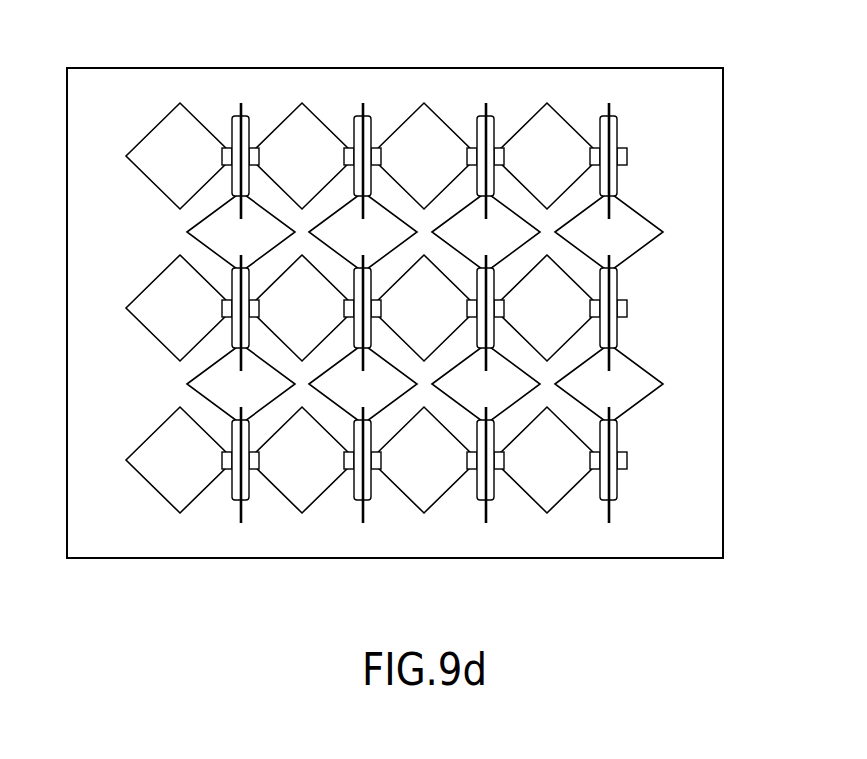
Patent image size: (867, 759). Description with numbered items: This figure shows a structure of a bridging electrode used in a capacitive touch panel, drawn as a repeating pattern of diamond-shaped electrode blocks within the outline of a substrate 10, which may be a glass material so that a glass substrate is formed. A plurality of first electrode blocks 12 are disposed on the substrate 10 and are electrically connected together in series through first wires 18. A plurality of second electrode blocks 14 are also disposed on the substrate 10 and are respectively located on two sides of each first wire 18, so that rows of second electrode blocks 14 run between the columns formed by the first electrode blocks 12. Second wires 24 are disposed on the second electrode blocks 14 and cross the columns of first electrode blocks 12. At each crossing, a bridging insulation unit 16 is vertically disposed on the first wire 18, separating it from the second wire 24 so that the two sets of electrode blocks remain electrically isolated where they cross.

The substrate 10 is at (696, 193).
The first electrode blocks 12 is at (176, 135).
The second electrode blocks 14 is at (215, 240).
The bridging insulation unit 16 is at (526, 121).
The first wire 18 is at (401, 94).
The second wires 24 is at (301, 116).